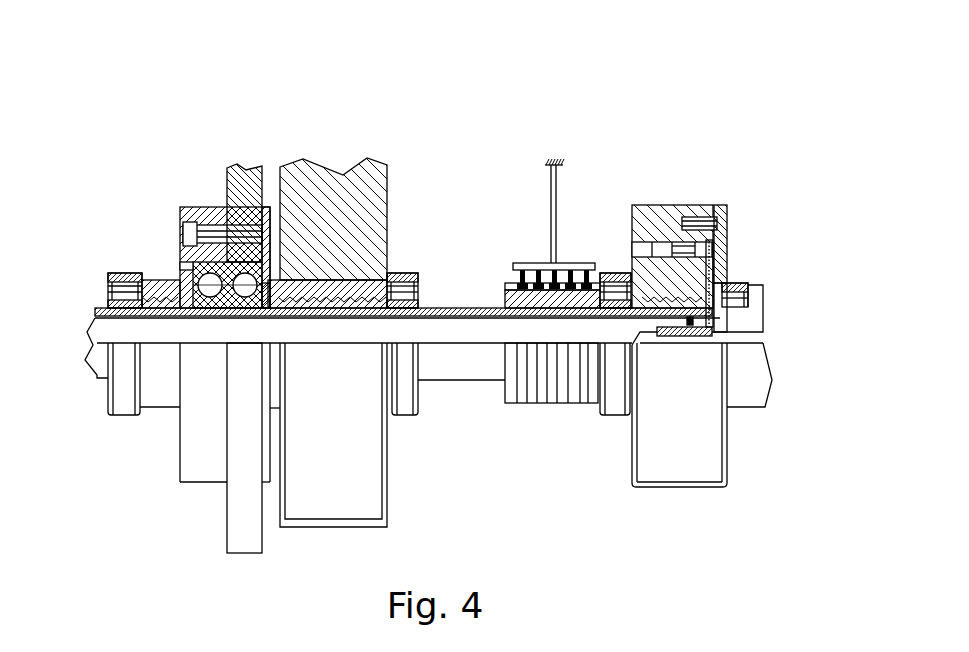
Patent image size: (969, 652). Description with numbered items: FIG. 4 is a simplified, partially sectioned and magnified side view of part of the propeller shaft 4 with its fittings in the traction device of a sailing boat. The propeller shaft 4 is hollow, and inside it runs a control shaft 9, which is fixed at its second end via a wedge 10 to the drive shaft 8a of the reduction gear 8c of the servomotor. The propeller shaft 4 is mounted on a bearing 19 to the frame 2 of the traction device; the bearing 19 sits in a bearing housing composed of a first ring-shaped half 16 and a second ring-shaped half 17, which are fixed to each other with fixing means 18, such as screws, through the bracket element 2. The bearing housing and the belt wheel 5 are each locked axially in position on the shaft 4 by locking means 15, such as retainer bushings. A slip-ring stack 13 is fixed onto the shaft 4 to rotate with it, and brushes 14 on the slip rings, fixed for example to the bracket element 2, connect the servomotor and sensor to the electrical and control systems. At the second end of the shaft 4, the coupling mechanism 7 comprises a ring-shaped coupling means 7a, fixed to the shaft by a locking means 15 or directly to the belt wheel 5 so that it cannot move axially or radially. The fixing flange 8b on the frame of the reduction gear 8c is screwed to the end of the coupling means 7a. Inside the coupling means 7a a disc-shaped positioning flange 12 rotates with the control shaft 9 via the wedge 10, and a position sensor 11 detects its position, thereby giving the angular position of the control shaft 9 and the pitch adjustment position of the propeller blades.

The frame 2 is at (243, 173).
The propeller shaft 4 is at (450, 306).
The belt wheel 5 is at (370, 170).
The coupling mechanism 7 is at (688, 92).
The coupling means 7a is at (647, 212).
The drive shaft 8a is at (740, 338).
The fixing flange 8b is at (727, 243).
The reduction gear 8c is at (750, 283).
The control shaft 9 is at (485, 325).
The wedge 10 is at (690, 338).
The position sensor 11 is at (667, 250).
The positioning flange 12 is at (715, 262).
The slip-ring stack 13 is at (542, 403).
The brushes 14 is at (538, 263).
The locking means 15 is at (123, 273).
The first ring-shaped half 16 is at (195, 207).
The second ring-shaped half 17 is at (268, 207).
The fixing means 18 is at (190, 207).
The bearing 19 is at (192, 268).